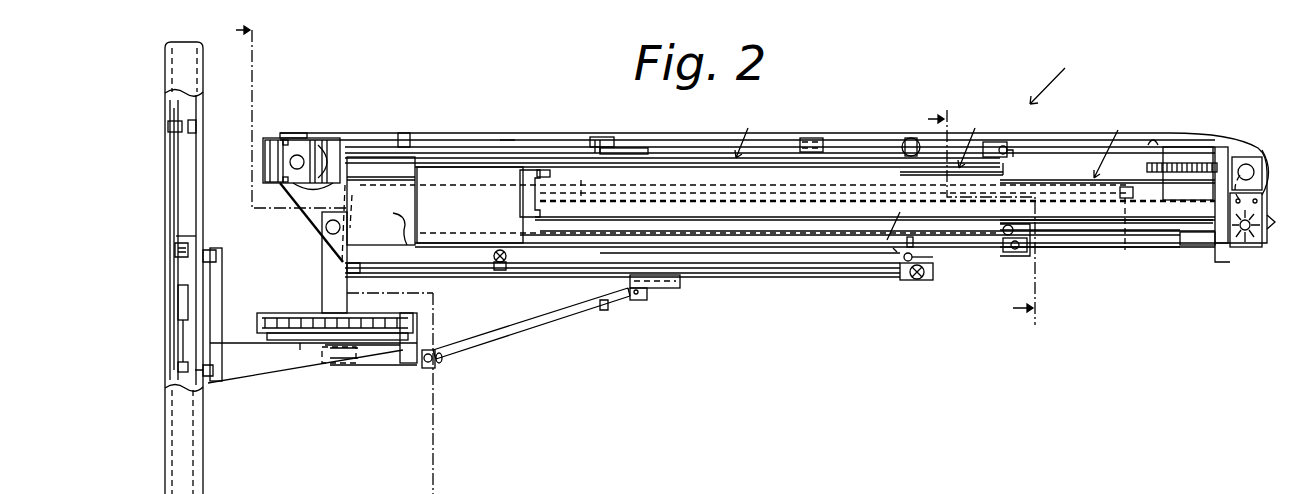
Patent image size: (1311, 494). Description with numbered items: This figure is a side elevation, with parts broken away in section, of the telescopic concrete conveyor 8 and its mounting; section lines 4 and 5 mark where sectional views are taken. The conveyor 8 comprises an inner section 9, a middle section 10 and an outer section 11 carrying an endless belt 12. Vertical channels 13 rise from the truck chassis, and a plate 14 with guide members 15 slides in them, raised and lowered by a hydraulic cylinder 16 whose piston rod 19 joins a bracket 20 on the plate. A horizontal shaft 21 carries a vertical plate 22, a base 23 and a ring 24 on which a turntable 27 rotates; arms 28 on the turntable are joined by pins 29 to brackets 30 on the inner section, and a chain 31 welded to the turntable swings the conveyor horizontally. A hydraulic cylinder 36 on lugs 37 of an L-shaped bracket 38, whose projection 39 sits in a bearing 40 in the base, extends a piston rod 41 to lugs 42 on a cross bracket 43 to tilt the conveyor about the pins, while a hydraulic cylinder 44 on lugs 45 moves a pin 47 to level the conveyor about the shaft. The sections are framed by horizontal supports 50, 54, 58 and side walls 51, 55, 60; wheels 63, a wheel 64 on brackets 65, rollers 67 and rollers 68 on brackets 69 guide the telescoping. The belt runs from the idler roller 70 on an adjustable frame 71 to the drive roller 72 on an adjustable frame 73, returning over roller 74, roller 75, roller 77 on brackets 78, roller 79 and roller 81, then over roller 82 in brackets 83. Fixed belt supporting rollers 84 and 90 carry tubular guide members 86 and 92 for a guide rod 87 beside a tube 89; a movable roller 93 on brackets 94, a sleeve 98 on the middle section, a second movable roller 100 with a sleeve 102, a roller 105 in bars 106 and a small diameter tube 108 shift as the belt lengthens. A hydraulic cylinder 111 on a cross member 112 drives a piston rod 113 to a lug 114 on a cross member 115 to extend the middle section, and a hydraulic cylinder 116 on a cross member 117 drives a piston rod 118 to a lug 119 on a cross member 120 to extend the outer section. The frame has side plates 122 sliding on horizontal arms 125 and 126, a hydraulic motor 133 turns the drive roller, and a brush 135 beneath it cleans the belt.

The section line 4- 4 is at (278, 116).
The section line 5- 5 is at (993, 207).
The conveyor 8 is at (1047, 76).
The inner section 9 is at (743, 132).
The middle section 10 is at (974, 138).
The outer section 11 is at (1113, 143).
The endless belt 12 is at (1225, 145).
The vertical channels 13 is at (163, 100).
The plate 14 is at (197, 128).
The guide members 15 is at (193, 250).
The hydraulic cylinder 16 is at (170, 345).
The piston rod 19 is at (173, 157).
The bracket 20 is at (186, 127).
The horizontal shaft 21 is at (207, 257).
The vertical plate 22 is at (222, 298).
The base 23 is at (262, 372).
The ring 24 is at (305, 343).
The turntable 27 is at (296, 312).
The arms 28 is at (322, 262).
The pins 29 is at (326, 229).
The brackets 30 is at (340, 208).
The chain 31 is at (257, 323).
The hydraulic cylinder 36 is at (520, 336).
The lugs 37 is at (436, 372).
The L-shaped bracket 38 is at (417, 338).
The projection 39 is at (330, 375).
The bearing 40 is at (356, 362).
The piston rod 41 is at (606, 311).
The lugs 42 is at (642, 301).
The cross bracket 43 is at (678, 289).
The hydraulic cylinder 44 is at (183, 303).
The lugs 45 is at (185, 238).
The pin 47 is at (210, 370).
The horizontal supports 50 is at (852, 158).
The side walls 51 is at (377, 160).
The horizontal supports 54 is at (420, 165).
The side walls 55 is at (466, 244).
The horizontal supports 58 is at (522, 201).
The side walls 60 is at (1110, 226).
The wheels 63 is at (420, 165).
The wheel 64 is at (935, 259).
The brackets 65 is at (935, 280).
The rollers 67 is at (540, 178).
The rollers 68 is at (1035, 232).
The brackets 69 is at (1035, 251).
The idler roller 70 is at (322, 150).
The adjustable frame 71 is at (263, 179).
The drive roller 72 is at (1271, 178).
The adjustable frame 73 is at (1272, 221).
The roller 74 is at (578, 213).
The roller 75 is at (1020, 256).
The roller 77 is at (492, 266).
The brackets 78 is at (506, 272).
The roller 79 is at (905, 281).
The roller 81 is at (358, 268).
The roller 82 is at (404, 133).
The brackets 83 is at (424, 163).
The belt supporting roller 84 is at (602, 135).
The tubular guide member 86 is at (594, 136).
The guide rod 87 is at (500, 140).
The tube 89 is at (548, 150).
The belt supporting roller 90 is at (811, 139).
The tubular guide member 92 is at (801, 143).
The movable roller 93 is at (920, 140).
The brackets 94 is at (903, 146).
The sleeve 98 is at (988, 142).
The second movable roller 100 is at (1007, 142).
The sleeve 102 is at (1012, 152).
The roller 105 is at (1155, 140).
The bars 106 is at (1168, 173).
The small diameter tube 108 is at (1075, 145).
The hydraulic cylinder 111 is at (393, 214).
The cross member 112 is at (355, 200).
The piston rod 113 is at (893, 221).
The lug 114 is at (912, 240).
The cross member 115 is at (893, 250).
The hydraulic cylinder 116 is at (773, 205).
The cross member 117 is at (397, 186).
The piston rod 118 is at (1030, 201).
The lug 119 is at (1133, 192).
The cross member 120 is at (1126, 232).
The side plates 122 is at (1214, 247).
The horizontal arms 125 is at (1196, 150).
The horizontal arms 126 is at (1182, 240).
The hydraulic motor 133 is at (1255, 162).
The brush 135 is at (1248, 250).